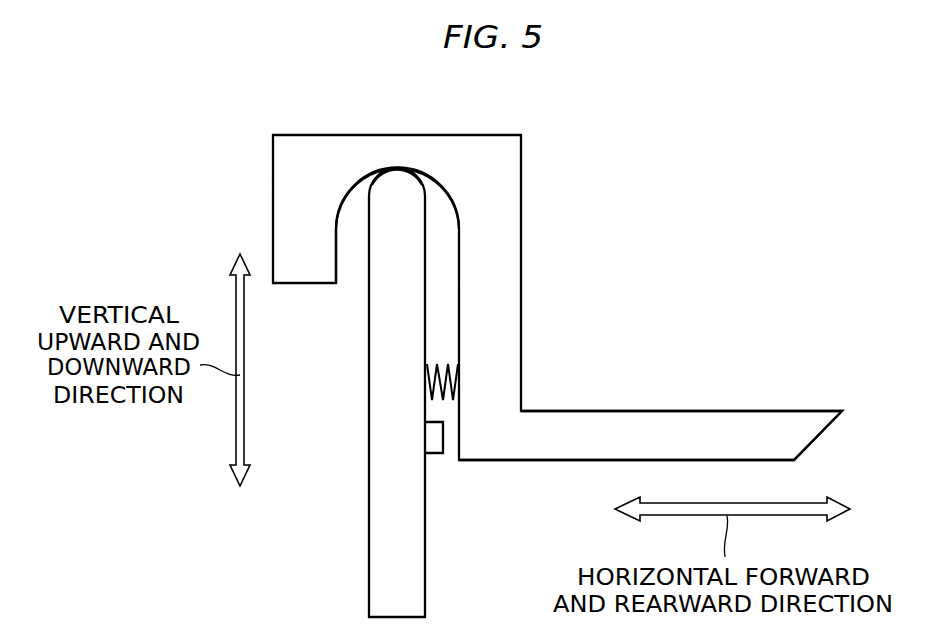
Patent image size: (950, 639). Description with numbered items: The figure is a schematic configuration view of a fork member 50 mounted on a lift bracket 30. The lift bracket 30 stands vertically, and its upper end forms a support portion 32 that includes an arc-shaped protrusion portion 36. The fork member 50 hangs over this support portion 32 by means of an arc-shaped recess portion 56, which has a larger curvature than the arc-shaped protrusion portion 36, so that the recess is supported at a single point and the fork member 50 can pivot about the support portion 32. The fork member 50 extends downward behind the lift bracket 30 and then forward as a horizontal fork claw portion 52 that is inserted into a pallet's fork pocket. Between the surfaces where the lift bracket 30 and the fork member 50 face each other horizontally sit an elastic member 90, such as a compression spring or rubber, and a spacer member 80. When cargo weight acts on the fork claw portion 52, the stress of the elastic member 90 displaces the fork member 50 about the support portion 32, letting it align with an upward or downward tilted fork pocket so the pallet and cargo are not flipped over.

The lift bracket 30 is at (377, 499).
The support portion 32 is at (397, 182).
The arc-shaped protrusion portion 36 is at (423, 186).
The fork member 50 is at (502, 168).
The fork claw portion 52 is at (782, 423).
The arc-shaped recess portion 56 is at (356, 188).
The spacer member 80 is at (438, 433).
The elastic member 90 is at (443, 367).